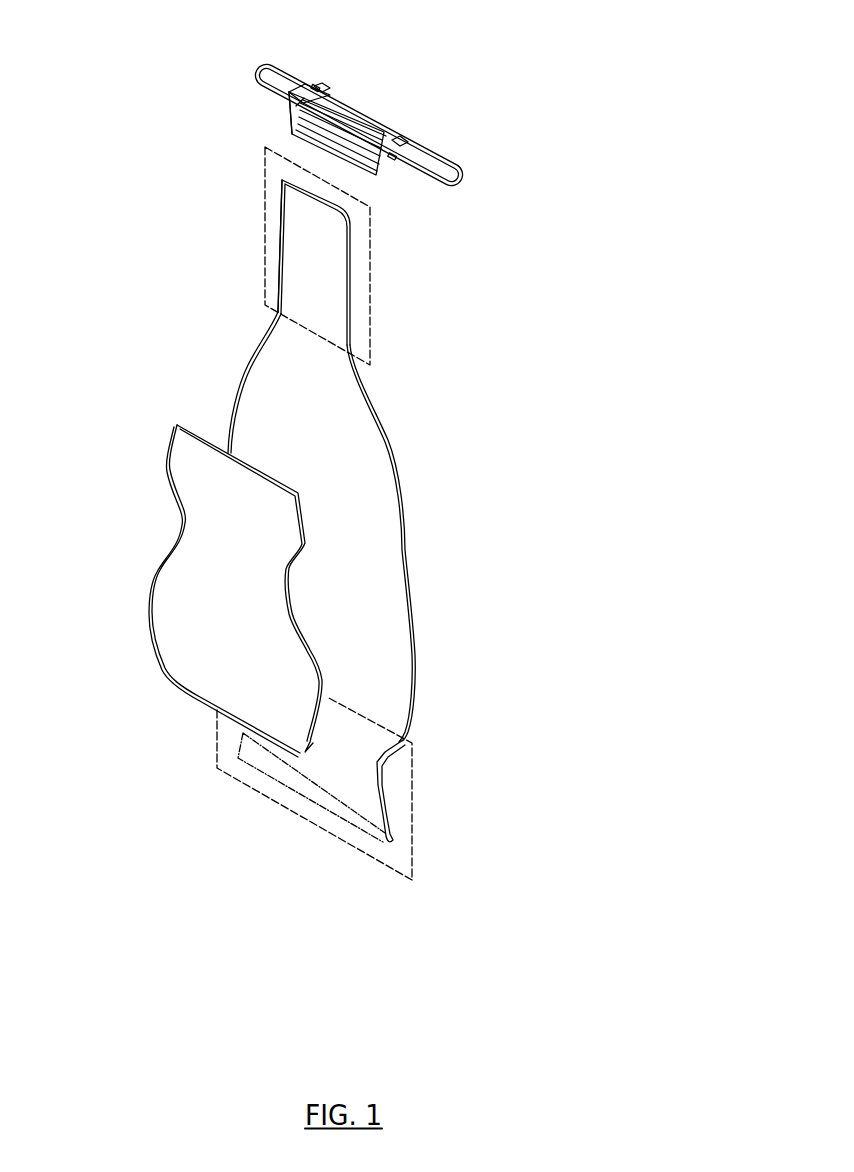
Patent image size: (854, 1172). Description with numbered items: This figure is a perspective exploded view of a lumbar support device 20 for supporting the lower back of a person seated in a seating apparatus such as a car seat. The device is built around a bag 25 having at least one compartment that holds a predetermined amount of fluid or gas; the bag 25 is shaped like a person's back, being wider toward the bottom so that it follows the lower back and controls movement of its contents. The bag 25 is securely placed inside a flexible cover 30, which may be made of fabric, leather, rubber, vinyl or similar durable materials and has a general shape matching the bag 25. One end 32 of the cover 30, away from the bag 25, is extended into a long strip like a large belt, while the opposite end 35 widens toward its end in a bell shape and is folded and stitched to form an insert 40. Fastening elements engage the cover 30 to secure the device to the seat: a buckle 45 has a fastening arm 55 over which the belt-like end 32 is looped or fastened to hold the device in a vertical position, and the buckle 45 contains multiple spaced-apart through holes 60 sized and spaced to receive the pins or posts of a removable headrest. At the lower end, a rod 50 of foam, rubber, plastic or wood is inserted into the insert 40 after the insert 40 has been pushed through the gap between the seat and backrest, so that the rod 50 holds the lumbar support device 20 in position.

The lumbar support device 20 is at (488, 523).
The bag 25 is at (173, 420).
The flexible cover 30 is at (262, 340).
The belt like end of the cover 32 is at (370, 283).
The bell shaped end of the cover 35 is at (217, 750).
The insert 40 is at (380, 848).
The buckle 45 is at (427, 148).
The rod 50 is at (388, 838).
The fastening arm 55 is at (292, 113).
The through holes 60 is at (317, 95).